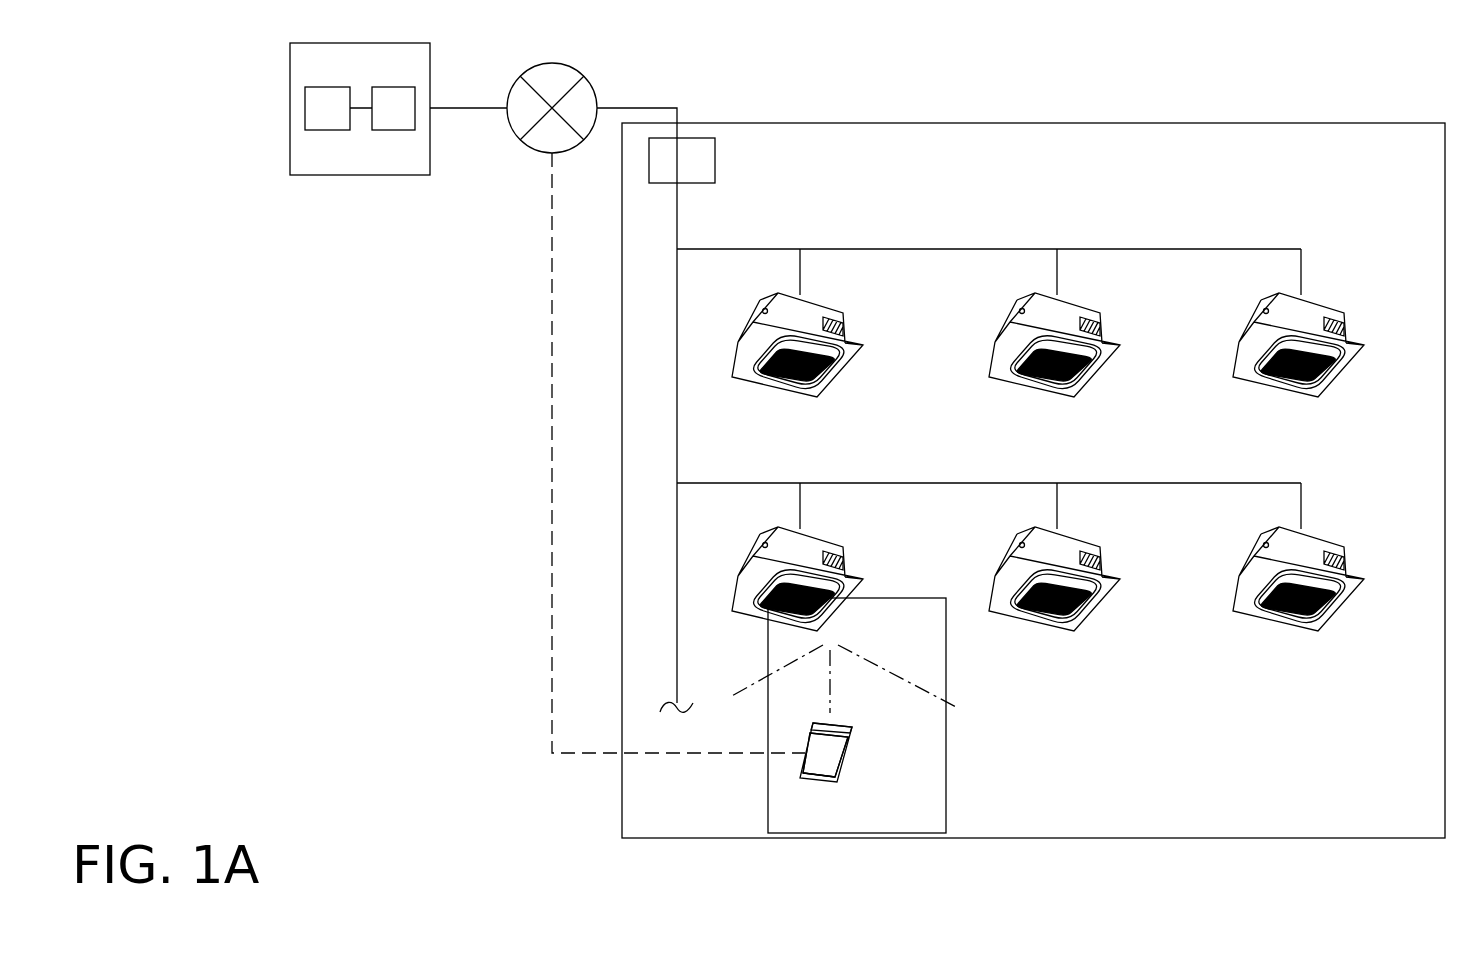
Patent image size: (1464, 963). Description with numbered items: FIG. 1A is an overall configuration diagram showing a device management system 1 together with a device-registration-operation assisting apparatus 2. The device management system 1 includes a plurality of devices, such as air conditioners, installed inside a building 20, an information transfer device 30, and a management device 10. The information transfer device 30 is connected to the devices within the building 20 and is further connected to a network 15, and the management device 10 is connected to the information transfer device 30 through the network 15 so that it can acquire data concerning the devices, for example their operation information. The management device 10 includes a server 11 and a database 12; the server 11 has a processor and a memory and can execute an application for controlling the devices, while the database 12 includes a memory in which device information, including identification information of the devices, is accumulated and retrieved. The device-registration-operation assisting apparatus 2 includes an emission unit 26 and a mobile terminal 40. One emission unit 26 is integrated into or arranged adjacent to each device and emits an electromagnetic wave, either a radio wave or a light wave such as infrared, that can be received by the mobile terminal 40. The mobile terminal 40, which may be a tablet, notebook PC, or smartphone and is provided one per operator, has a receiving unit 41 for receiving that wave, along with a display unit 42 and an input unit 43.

The device management system 1 is at (921, 48).
The device-registration-operation assisting apparatus 2 is at (946, 765).
The management device 10 is at (430, 43).
The server 11 is at (393, 108).
The database 12 is at (327, 108).
The network 15 is at (584, 76).
The building 20 is at (1332, 123).
The emission unit 26 is at (830, 618).
The information transfer device 30 is at (715, 138).
The mobile terminal 40 is at (847, 752).
The receiving unit 41 is at (851, 718).
The display unit 42 is at (823, 750).
The input unit 43 is at (819, 775).